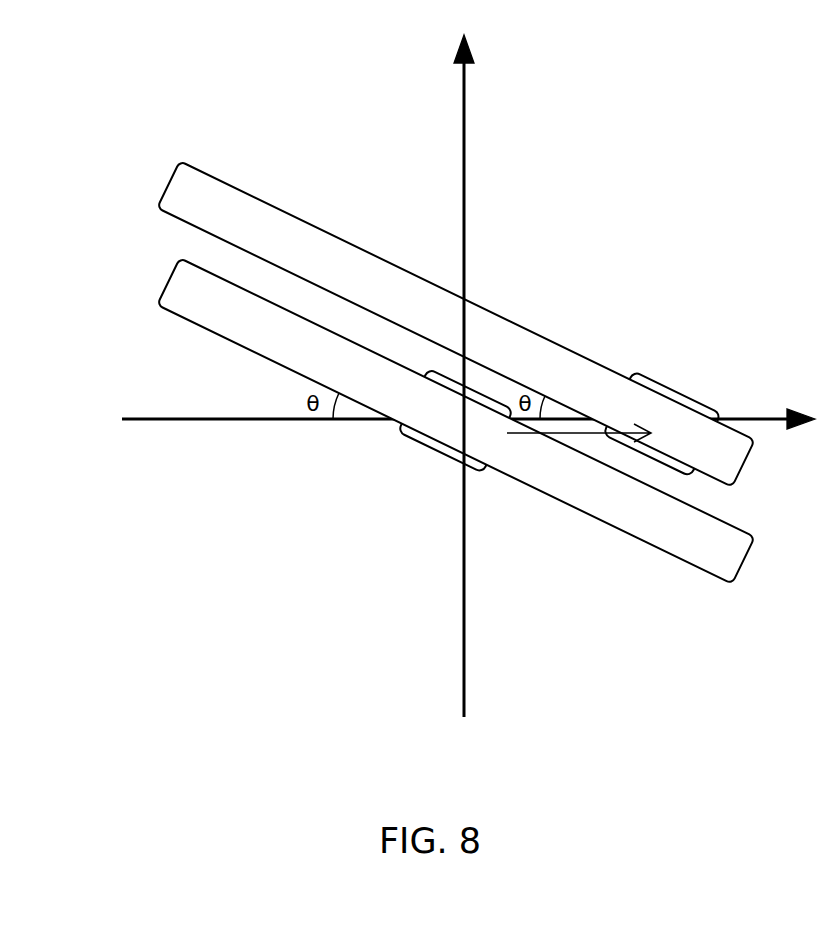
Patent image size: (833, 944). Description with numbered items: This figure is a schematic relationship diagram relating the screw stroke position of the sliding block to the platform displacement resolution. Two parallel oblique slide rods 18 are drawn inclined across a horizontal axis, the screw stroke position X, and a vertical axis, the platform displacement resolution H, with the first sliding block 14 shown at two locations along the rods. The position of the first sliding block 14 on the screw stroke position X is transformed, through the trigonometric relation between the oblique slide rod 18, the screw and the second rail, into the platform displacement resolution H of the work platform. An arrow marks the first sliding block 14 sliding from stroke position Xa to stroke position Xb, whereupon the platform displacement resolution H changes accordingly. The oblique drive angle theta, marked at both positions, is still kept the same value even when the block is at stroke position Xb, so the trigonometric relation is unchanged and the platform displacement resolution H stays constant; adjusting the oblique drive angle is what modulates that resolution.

The first sliding block 14 is at (703, 398).
The oblique slide rod 18 is at (216, 176).
The screw stroke position X is at (468, 438).
The platform displacement resolution H is at (482, 375).
The stroke position Xa is at (550, 429).
The stroke position Xb is at (676, 428).